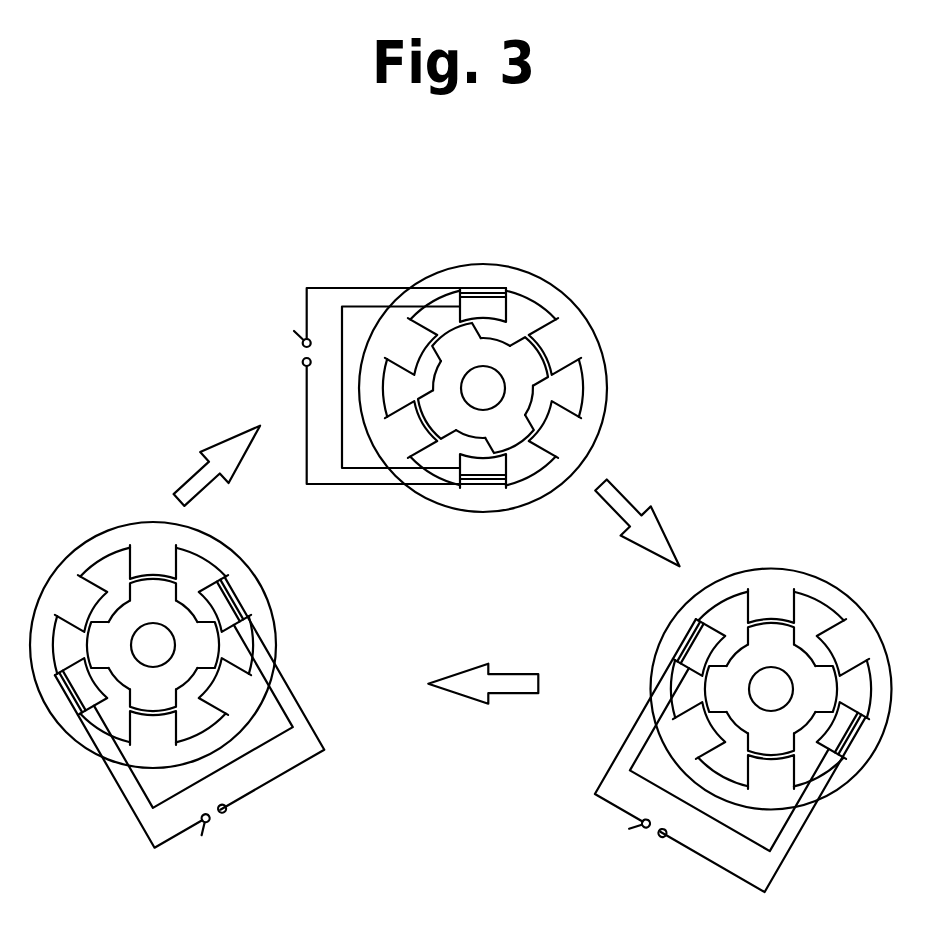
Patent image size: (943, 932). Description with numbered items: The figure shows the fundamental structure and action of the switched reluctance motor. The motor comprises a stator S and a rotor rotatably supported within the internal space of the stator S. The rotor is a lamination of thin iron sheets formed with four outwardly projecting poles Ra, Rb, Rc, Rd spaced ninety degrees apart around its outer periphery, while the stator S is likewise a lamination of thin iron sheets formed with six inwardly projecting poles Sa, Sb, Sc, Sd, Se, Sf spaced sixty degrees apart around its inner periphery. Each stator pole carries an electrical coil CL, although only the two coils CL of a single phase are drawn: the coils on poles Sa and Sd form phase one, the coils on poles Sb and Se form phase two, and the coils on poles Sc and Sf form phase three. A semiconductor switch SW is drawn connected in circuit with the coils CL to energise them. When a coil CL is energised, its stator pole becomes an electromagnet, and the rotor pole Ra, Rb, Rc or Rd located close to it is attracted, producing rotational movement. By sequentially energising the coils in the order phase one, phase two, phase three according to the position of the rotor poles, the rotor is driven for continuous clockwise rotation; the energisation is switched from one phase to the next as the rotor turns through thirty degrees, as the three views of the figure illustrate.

The stator S is at (537, 290).
The stator pole Sa is at (490, 305).
The stator pole Sb is at (568, 347).
The stator pole Sc is at (560, 430).
The stator pole Sd is at (465, 482).
The stator pole Se is at (400, 443).
The stator pole Sf is at (403, 337).
The rotor pole Ra is at (455, 340).
The rotor pole Rb is at (523, 353).
The rotor pole Rc is at (513, 433).
The rotor pole Rd is at (412, 415).
The electrical coil CL is at (480, 485).
The semiconductor switch circuit SW is at (388, 345).